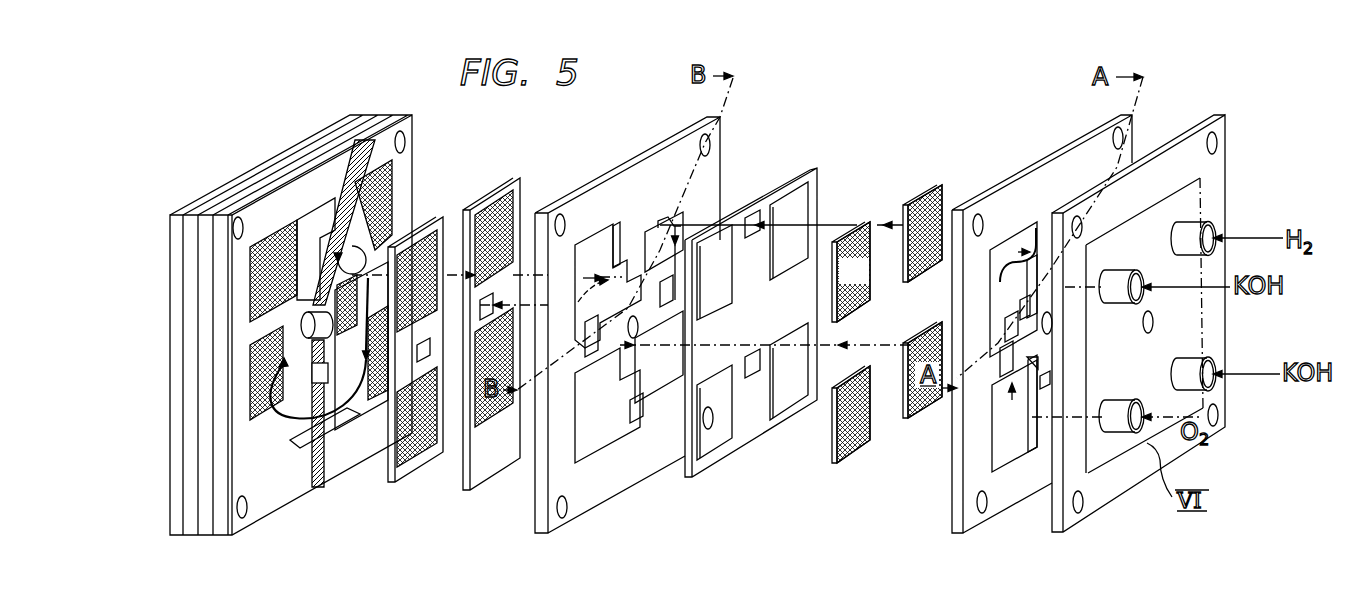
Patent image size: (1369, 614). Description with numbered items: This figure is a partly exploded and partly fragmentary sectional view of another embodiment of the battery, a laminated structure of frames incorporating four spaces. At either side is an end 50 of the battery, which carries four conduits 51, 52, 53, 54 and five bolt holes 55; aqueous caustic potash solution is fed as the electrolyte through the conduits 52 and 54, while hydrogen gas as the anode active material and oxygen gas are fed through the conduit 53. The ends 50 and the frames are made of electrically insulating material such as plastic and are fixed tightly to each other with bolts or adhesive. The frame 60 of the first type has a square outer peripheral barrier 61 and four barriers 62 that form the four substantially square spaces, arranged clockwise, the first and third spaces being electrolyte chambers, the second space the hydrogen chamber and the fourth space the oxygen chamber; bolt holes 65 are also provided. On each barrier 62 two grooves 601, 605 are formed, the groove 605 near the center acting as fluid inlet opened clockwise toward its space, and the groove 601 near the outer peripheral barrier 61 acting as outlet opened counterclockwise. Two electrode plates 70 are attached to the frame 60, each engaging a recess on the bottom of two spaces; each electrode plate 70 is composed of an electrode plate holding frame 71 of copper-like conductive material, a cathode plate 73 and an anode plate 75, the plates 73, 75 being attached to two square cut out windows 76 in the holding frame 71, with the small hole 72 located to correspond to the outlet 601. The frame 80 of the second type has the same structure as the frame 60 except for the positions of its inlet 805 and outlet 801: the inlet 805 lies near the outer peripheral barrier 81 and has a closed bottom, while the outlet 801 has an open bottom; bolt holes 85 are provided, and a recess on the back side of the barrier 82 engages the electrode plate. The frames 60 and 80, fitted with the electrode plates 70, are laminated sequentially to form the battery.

The end of the battery 50 is at (208, 570).
The conduit 51 is at (1122, 405).
The conduit 52 is at (1120, 273).
The conduit 53 is at (1212, 228).
The conduit 54 is at (1210, 362).
The bolt hole 55 is at (1219, 143).
The frame of first type 60 is at (988, 580).
The outer peripheral barrier 61 is at (975, 485).
The barrier 62 is at (1040, 272).
The bolt hole 65 is at (1112, 135).
The electrode plate 70 is at (755, 521).
The electrode plate holding frame 71 is at (813, 167).
The small hole 72 is at (752, 217).
The cathode plate 73 is at (865, 283).
The anode plate 75 is at (917, 200).
The square cut out window 76 is at (802, 197).
The frame of second type 80 is at (603, 570).
The outer peripheral barrier 81 is at (630, 177).
The barrier 82 is at (618, 230).
The bolt hole 85 is at (712, 140).
The groove 601 is at (1043, 235).
The groove 605 is at (1025, 318).
The outlet 801 is at (626, 240).
The inlet 805 is at (662, 304).